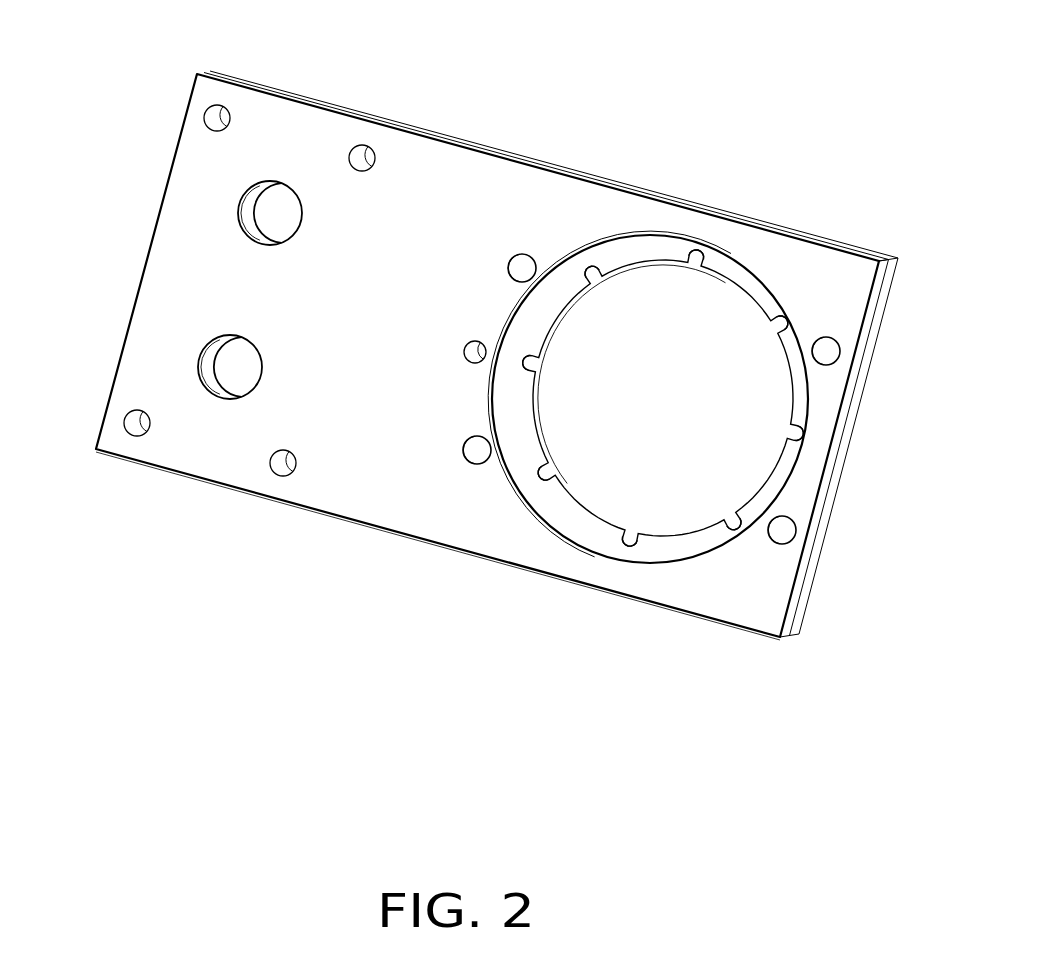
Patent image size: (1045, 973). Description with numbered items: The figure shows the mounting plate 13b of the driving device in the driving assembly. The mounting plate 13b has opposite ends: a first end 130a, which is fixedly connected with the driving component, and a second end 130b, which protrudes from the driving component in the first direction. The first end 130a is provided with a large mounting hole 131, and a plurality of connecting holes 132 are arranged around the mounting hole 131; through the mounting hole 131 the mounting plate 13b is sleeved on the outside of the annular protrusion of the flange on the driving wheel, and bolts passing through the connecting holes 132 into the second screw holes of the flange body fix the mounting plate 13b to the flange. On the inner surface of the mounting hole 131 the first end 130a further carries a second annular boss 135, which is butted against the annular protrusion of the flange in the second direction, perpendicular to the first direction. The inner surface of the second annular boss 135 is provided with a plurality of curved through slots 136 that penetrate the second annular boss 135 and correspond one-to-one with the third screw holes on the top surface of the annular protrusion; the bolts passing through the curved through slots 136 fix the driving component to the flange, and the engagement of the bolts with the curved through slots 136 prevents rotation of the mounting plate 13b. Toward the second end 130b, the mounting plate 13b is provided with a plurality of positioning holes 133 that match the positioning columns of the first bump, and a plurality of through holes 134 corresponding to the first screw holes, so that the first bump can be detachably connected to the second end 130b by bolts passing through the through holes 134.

The mounting plate 13b is at (542, 36).
The first end 130a is at (593, 198).
The second end 130b is at (318, 115).
The mounting hole 131 is at (608, 478).
The connecting holes 132 is at (516, 277).
The positioning holes 133 is at (214, 350).
The through holes 134 is at (352, 152).
The second annular boss 135 is at (738, 272).
The curved through slots 136 is at (606, 276).